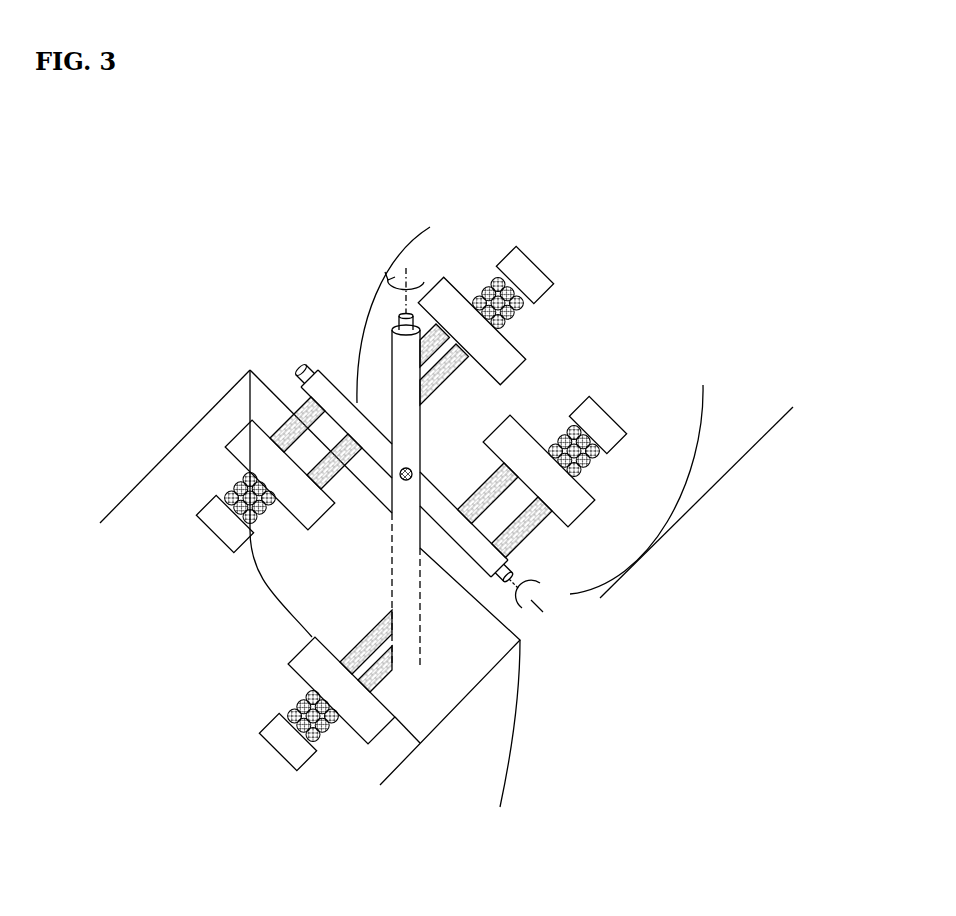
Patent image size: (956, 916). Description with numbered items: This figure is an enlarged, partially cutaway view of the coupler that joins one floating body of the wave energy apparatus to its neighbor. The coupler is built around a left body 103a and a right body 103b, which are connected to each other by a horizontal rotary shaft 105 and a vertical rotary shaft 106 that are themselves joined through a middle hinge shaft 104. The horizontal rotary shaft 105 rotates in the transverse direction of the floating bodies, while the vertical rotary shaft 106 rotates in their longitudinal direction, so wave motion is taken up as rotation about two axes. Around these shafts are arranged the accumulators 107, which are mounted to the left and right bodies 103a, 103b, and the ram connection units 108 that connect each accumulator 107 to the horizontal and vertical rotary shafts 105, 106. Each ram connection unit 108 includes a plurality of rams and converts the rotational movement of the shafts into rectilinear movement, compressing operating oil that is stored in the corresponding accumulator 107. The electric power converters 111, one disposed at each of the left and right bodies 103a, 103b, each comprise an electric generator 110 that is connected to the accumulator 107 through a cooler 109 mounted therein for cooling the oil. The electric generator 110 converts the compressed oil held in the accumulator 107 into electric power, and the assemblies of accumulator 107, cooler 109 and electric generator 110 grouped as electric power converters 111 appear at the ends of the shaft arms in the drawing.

The left body 103a is at (162, 460).
The right body 103b is at (750, 436).
The middle hinge shaft 104 is at (392, 487).
The horizontal rotary shaft 105 is at (322, 380).
The vertical rotary shaft 106 is at (412, 585).
The accumulator 107 is at (442, 283).
The ram connection unit 108 is at (312, 430).
The cooler 109 is at (492, 288).
The electric generator 110 is at (523, 268).
The electric power converter 111 is at (570, 163).